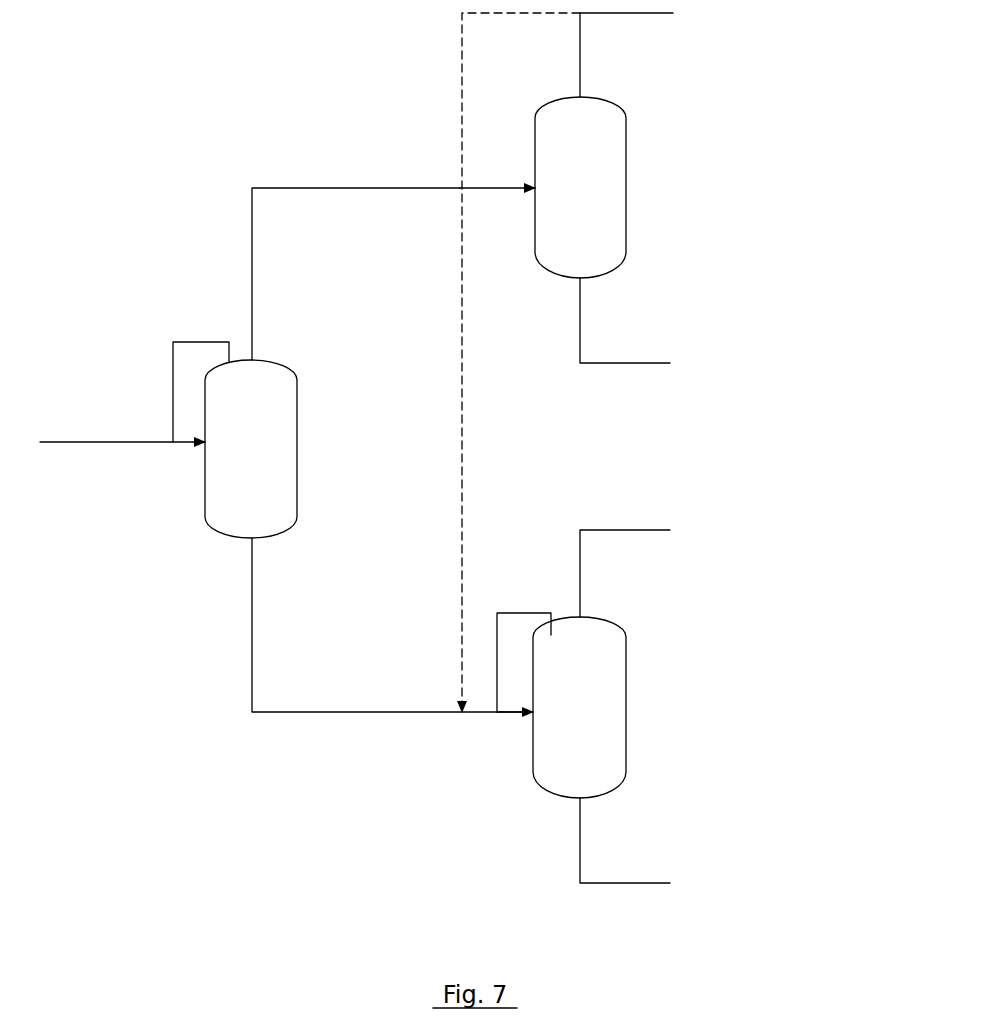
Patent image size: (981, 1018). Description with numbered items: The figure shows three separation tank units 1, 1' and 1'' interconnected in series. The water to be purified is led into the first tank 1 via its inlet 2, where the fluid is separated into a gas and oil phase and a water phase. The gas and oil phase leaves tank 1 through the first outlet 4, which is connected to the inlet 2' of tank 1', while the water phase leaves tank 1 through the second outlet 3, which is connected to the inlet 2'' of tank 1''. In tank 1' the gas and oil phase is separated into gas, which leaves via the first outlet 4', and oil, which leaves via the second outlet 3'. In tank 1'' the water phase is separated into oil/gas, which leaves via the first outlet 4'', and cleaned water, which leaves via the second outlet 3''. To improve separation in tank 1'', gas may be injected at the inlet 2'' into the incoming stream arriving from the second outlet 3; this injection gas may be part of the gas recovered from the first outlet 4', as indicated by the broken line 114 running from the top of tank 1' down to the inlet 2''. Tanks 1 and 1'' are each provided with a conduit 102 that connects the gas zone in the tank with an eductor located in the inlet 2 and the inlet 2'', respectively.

The separation tank unit 1 is at (291, 449).
The inlet 2 is at (122, 392).
The second outlet 3 is at (392, 625).
The first outlet 4 is at (356, 274).
The conduit 102 is at (193, 341).
The broken line 114 is at (462, 352).
The separation tank unit 1' is at (624, 187).
The inlet 2' is at (497, 148).
The second outlet 3' is at (625, 320).
The first outlet 4' is at (626, 55).
The separation tank unit 1'' is at (622, 707).
The inlet 2'' is at (499, 660).
The second outlet 3'' is at (625, 840).
The first outlet 4'' is at (625, 573).